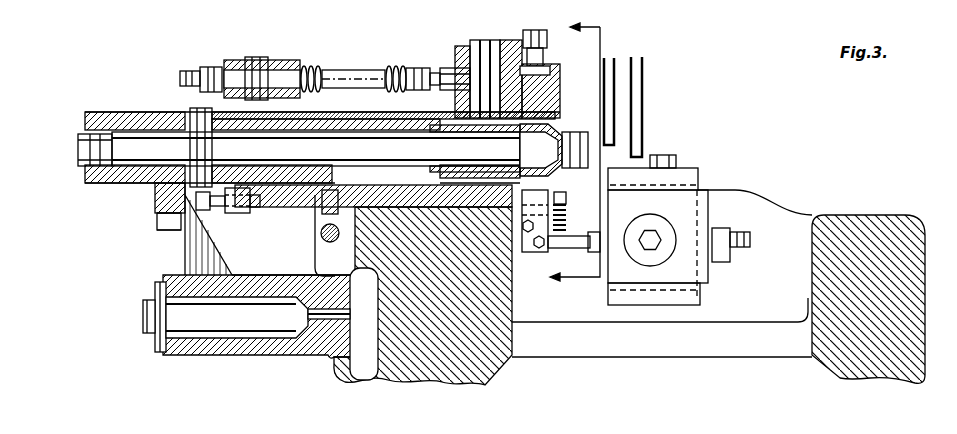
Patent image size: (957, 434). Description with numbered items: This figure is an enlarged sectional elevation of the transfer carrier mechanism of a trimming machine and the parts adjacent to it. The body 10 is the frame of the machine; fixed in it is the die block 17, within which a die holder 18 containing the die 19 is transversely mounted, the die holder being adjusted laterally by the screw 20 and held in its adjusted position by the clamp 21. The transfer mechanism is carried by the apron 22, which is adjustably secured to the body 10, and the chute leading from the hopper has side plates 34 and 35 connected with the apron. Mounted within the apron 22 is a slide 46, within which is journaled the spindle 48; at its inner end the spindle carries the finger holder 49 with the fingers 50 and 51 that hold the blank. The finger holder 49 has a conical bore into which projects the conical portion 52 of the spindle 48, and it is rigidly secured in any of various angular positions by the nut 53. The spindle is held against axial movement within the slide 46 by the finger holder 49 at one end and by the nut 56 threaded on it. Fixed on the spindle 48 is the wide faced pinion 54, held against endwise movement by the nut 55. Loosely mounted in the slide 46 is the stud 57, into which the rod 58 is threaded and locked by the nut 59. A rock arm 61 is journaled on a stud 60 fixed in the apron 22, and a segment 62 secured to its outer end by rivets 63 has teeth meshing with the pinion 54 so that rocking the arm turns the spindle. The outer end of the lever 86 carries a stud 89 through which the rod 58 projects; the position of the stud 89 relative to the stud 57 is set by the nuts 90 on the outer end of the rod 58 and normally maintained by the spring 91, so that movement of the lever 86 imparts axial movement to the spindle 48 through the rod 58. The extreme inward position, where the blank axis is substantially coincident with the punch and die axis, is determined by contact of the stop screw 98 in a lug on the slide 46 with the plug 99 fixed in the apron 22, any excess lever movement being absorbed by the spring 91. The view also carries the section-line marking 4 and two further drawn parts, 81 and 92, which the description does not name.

The body 10 is at (500, 365).
The die block 17 is at (698, 298).
The die holder 18 is at (658, 245).
The die 19 is at (660, 258).
The screw 20 is at (750, 238).
The clamp 21 is at (698, 178).
The apron 22 is at (318, 275).
The side plate 34 is at (604, 72).
The side plate 35 is at (643, 90).
The section line 4- 4 is at (583, 161).
The slide 46 is at (325, 112).
The spindle 48 is at (316, 148).
The finger holder 49 is at (538, 252).
The finger 50 is at (568, 250).
The finger 51 is at (575, 228).
The conical portion 52 is at (548, 126).
The nut 53 is at (570, 170).
The wide faced pinion 54 is at (118, 184).
The nut 55 is at (80, 158).
The nut 56 is at (200, 108).
The stud 57 is at (485, 40).
The rod 58 is at (350, 70).
The nut 59 is at (446, 68).
The stud 60 is at (265, 340).
The rock arm 61 is at (195, 357).
The segment 62 is at (157, 210).
The rivets 63 is at (165, 228).
The set screw 81 is at (540, 30).
The lever 86 is at (282, 60).
The stud 89 is at (255, 57).
The nuts 90 is at (212, 67).
The spring 91 is at (318, 66).
The spring 92 is at (408, 68).
The stop screw 98 is at (250, 213).
The plug 99 is at (322, 200).